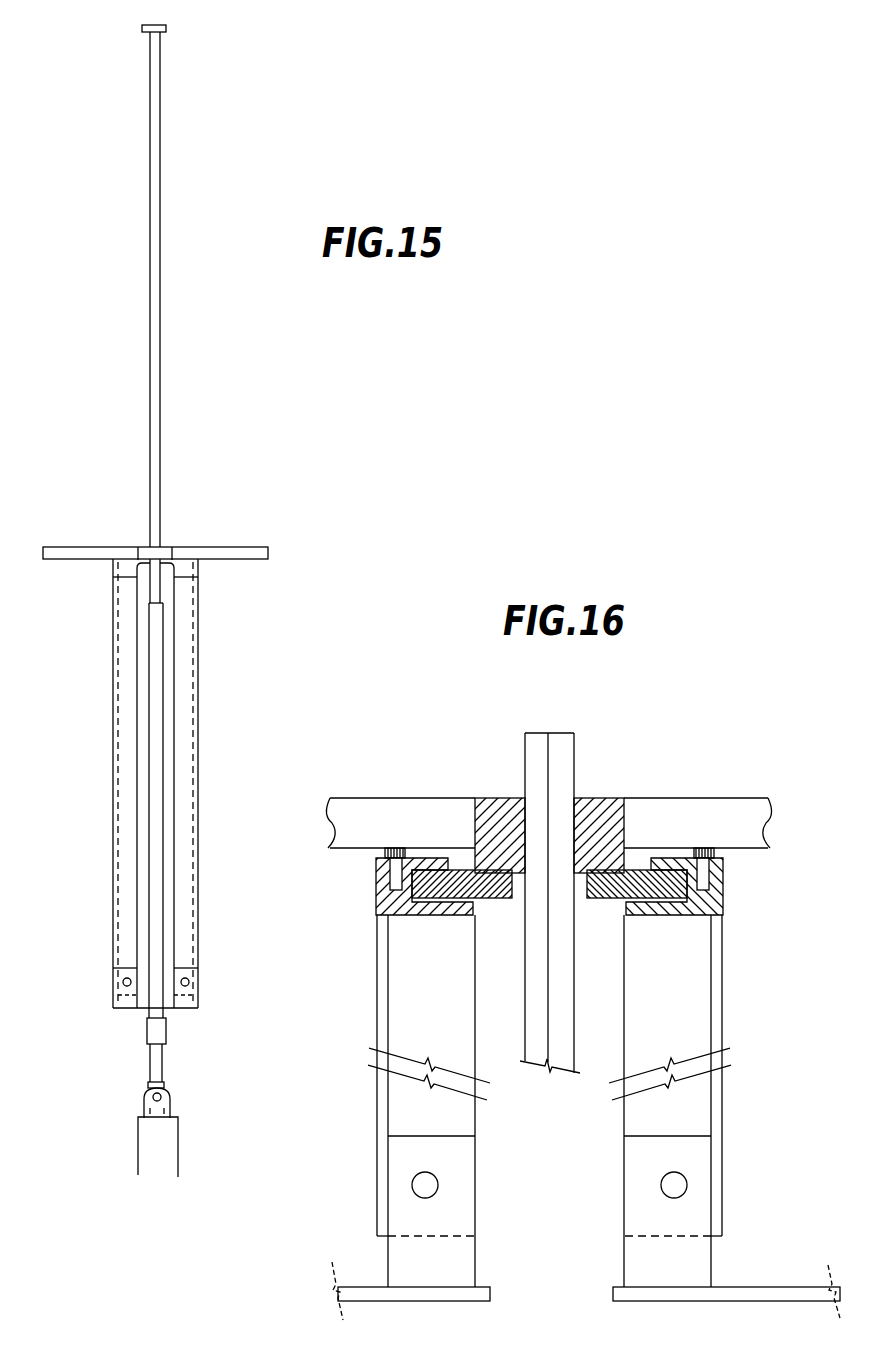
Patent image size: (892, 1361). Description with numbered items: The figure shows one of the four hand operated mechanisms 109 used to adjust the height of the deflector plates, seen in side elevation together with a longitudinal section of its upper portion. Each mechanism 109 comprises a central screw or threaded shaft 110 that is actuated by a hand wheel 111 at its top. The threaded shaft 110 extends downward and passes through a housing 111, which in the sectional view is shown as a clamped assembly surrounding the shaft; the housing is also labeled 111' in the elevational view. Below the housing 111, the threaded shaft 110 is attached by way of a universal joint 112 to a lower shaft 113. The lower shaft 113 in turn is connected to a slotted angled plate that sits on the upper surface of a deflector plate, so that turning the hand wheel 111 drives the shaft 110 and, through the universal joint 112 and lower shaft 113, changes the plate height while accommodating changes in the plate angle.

In FIG. 15, the hand operated mechanism 109 is at (157, 318).
In FIG. 15, the central screw or threaded shaft 110 is at (158, 106).
In FIG. 16, the central screw or threaded shaft 110 is at (563, 757).
In FIG. 15, the housing 111 is at (198, 517).
In FIG. 16, the housing 111 is at (548, 800).
In FIG. 15, the guide housing 111' is at (190, 783).
In FIG. 15, the universal joint 112 is at (143, 1100).
In FIG. 15, the lower shaft 113 is at (148, 1142).